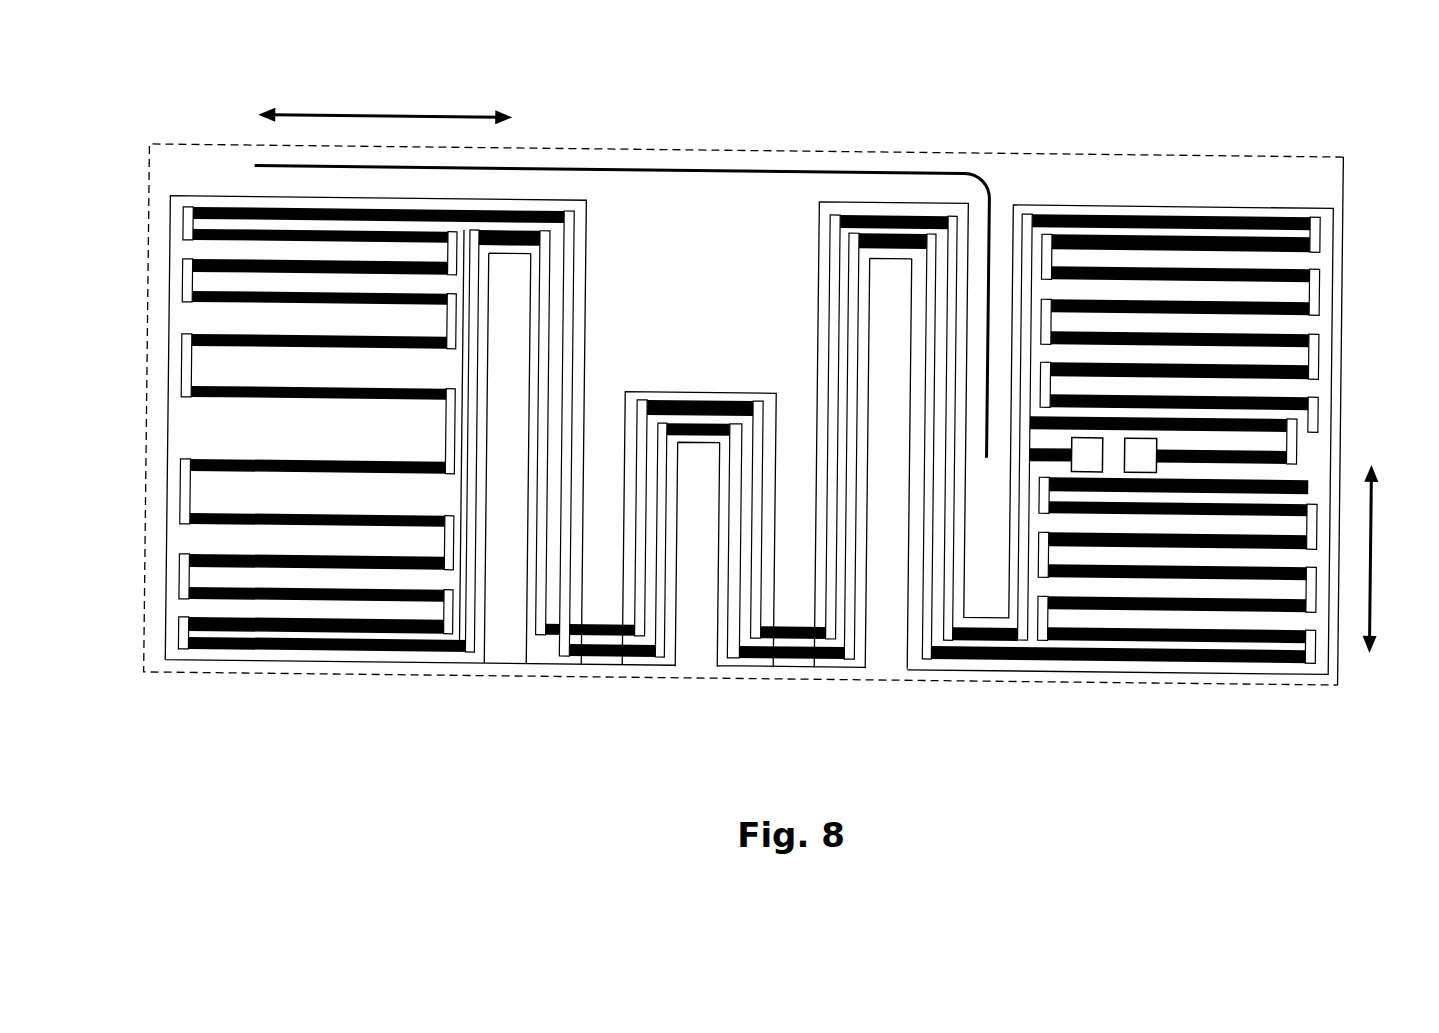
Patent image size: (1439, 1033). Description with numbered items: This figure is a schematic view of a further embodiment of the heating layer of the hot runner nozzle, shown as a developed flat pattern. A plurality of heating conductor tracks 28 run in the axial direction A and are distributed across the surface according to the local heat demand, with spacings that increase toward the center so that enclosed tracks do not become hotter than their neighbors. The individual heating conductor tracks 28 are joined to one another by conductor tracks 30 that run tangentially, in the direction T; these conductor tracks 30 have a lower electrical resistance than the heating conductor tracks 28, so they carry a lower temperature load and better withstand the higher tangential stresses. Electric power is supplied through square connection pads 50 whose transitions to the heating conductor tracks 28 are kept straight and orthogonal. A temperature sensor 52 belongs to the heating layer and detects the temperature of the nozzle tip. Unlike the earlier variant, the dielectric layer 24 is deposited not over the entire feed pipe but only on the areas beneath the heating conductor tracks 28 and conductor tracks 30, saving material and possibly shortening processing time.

The dielectric layer 24 is at (189, 323).
The heating conductor tracks 28 is at (857, 213).
The conductor tracks 30 is at (184, 499).
The connection pads 50 is at (1095, 456).
The temperature sensor 52 is at (578, 170).
The axial direction A is at (333, 118).
The direction T is at (1374, 560).